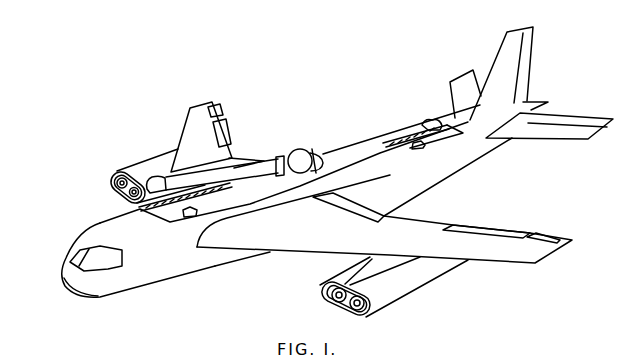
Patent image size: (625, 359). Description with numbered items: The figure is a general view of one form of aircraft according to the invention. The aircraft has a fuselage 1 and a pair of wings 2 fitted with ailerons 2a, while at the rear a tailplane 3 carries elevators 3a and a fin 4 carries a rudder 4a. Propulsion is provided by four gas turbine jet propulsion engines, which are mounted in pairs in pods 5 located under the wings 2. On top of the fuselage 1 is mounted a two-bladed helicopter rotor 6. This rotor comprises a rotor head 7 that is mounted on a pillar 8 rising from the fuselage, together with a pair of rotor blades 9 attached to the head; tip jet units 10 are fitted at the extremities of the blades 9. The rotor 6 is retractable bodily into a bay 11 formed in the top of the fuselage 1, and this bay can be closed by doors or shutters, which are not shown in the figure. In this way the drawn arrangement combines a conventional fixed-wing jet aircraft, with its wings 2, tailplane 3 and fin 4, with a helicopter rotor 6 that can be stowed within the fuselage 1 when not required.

The fuselage 1 is at (126, 286).
The wings 2 is at (190, 133).
The ailerons 2a is at (222, 133).
The tailplane 3 is at (545, 135).
The elevators 3a is at (562, 112).
The fin 4 is at (502, 62).
The rudder 4a is at (525, 65).
The pods 5 is at (137, 170).
The two-bladed helicopter rotor 6 is at (319, 146).
The rotor head 7 is at (297, 157).
The pillar 8 is at (278, 165).
The rotor blades 9 is at (392, 136).
The tip jet units 10 is at (133, 197).
The bay 11 is at (210, 203).